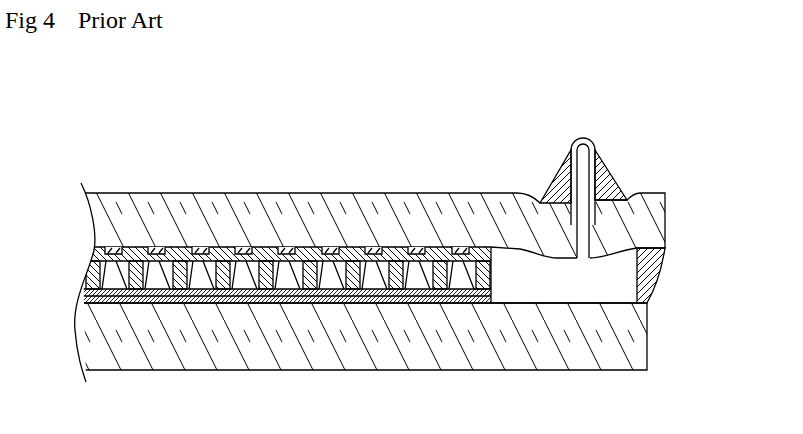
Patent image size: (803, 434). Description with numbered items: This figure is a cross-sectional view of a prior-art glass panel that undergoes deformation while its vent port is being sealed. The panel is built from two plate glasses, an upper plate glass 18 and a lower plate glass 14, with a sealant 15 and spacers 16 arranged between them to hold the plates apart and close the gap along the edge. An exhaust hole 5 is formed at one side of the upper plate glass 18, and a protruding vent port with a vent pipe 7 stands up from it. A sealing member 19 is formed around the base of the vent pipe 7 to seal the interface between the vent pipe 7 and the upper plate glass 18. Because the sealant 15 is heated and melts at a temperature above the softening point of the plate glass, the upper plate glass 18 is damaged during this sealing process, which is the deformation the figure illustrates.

The vent pipe 7 is at (586, 138).
The sealing member 19 is at (557, 177).
The upper plate glass 18 is at (658, 223).
The sealant 15 is at (650, 272).
The lower plate glass 14 is at (637, 348).
The spacers 16 is at (263, 283).
The exhaust hole 5 is at (577, 258).